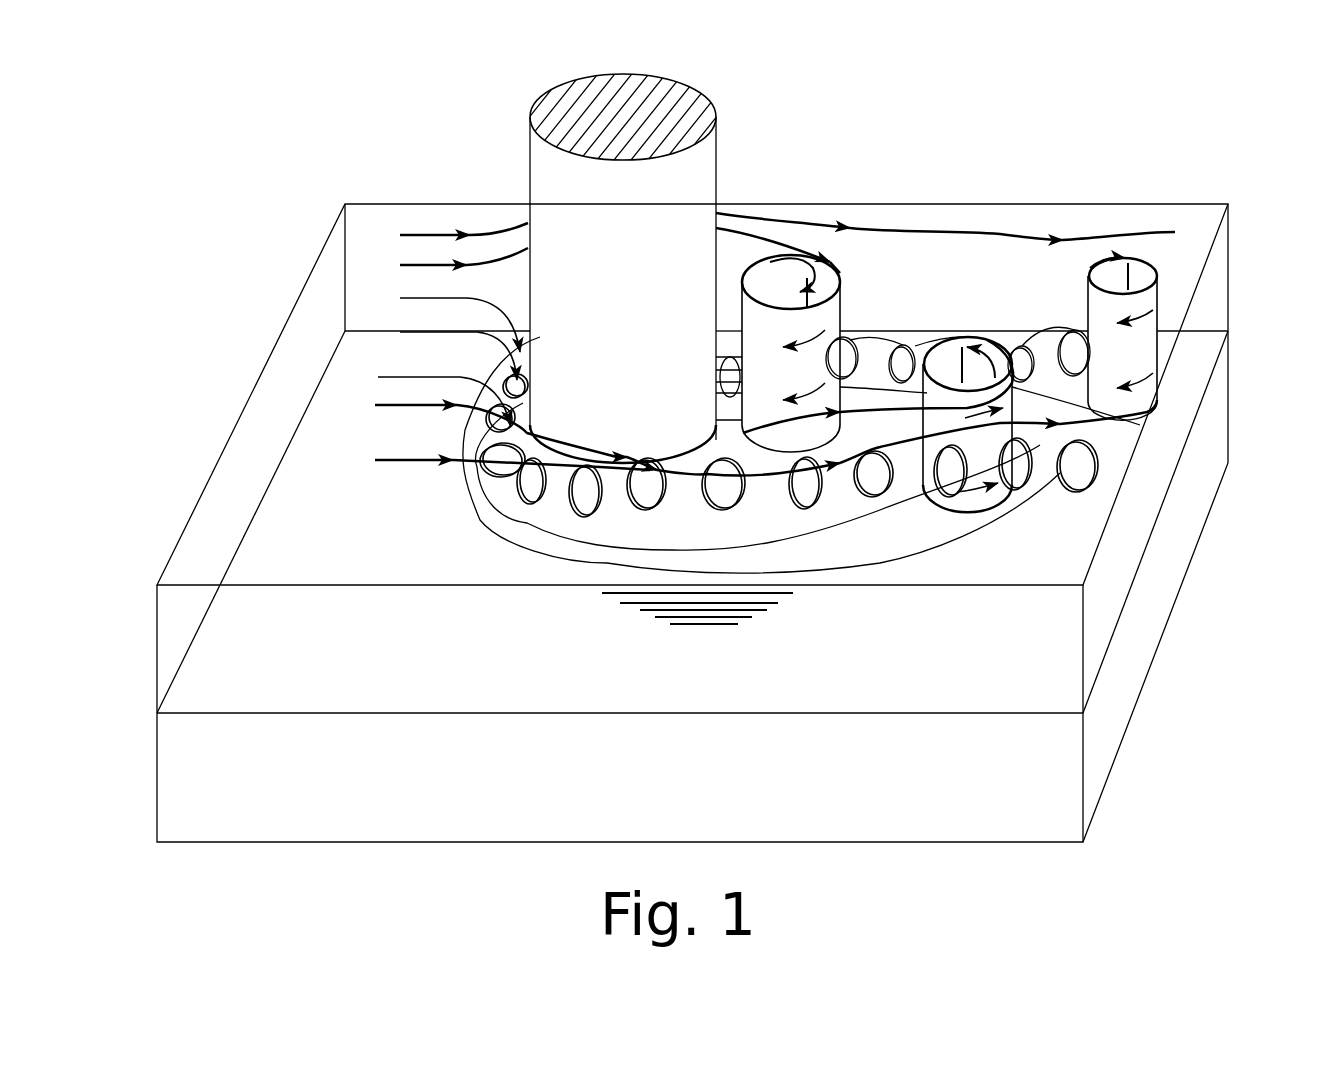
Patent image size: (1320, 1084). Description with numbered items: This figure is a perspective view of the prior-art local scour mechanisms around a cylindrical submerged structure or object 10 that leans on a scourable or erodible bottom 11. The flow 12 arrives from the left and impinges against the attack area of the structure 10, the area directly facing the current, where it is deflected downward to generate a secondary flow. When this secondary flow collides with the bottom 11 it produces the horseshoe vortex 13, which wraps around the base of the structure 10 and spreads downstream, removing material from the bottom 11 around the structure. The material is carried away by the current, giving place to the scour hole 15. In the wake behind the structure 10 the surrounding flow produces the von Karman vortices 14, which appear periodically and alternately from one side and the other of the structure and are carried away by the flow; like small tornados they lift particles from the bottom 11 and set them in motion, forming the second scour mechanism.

The cylindrical submerged structure 10 is at (543, 192).
The scourable bottom 11 is at (302, 488).
The flow 12 is at (510, 417).
The horseshoe vortex 13 is at (1030, 347).
The von Karman vortices 14 is at (987, 340).
The scour hole 15 is at (845, 510).